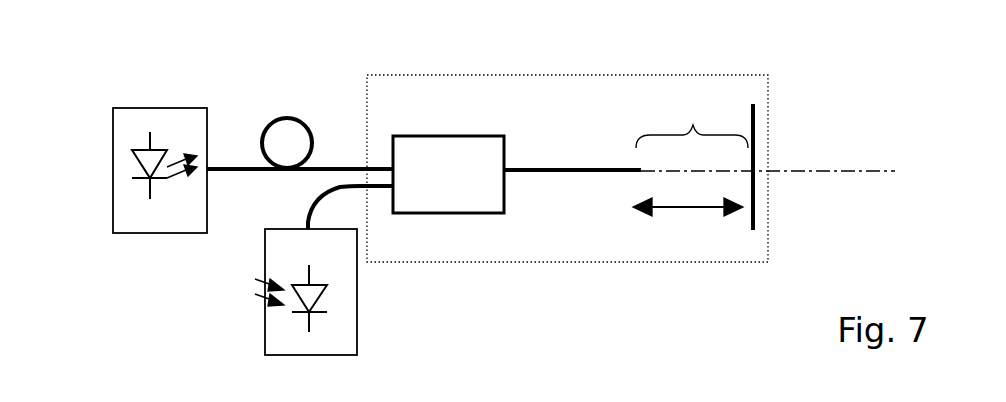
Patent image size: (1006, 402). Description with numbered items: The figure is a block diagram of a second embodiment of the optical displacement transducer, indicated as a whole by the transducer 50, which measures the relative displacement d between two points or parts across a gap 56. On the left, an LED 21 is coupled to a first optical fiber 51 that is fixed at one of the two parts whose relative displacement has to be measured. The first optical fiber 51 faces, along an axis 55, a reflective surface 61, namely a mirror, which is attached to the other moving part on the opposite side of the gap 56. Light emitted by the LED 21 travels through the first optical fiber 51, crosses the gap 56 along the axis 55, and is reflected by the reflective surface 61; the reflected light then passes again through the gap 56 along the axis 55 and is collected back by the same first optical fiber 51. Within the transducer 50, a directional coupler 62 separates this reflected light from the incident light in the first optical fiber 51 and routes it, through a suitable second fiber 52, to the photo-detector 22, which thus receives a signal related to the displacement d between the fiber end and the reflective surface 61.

The LED 21 is at (143, 110).
The first optical fiber 51 is at (300, 120).
The second fiber 52 is at (313, 200).
The photo-detector 22 is at (345, 292).
The optical displacement transducer 50 is at (567, 75).
The directional coupler 62 is at (455, 198).
The gap 56 is at (692, 110).
The reflective surface 61 is at (757, 110).
The axis 55 is at (768, 153).